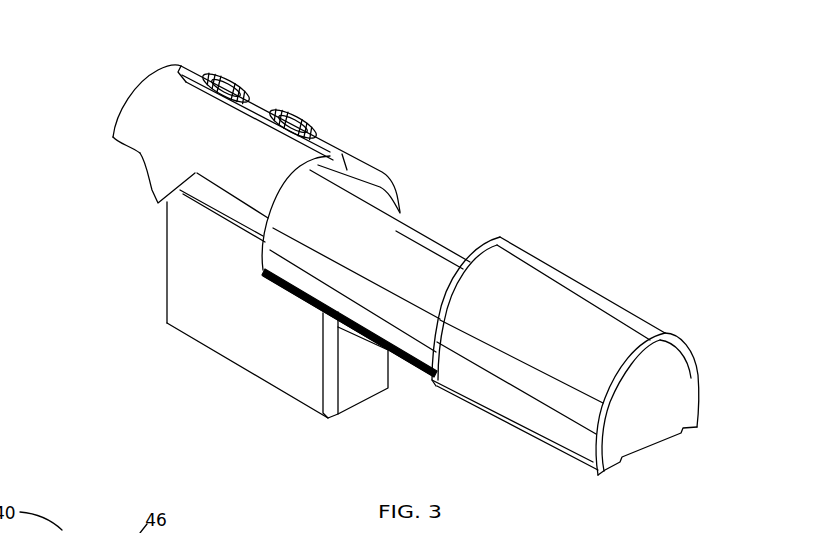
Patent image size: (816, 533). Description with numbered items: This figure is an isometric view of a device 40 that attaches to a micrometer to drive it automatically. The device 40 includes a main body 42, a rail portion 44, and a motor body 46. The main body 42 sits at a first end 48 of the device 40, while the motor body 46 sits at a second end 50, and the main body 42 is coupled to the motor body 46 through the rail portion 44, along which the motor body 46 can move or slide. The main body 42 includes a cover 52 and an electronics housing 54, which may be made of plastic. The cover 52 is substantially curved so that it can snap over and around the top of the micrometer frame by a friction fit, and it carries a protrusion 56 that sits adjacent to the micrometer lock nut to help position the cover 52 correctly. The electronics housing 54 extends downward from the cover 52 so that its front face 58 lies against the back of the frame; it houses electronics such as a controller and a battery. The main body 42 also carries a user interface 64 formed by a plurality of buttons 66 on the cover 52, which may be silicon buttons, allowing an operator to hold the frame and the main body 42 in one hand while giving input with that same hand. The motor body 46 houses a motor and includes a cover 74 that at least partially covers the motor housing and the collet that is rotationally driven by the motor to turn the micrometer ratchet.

The device 40 is at (600, 119).
The main body 42 is at (366, 97).
The rail portion 44 is at (457, 212).
The motor body 46 is at (600, 261).
The first end 48 is at (112, 99).
The second end 50 is at (735, 413).
The cover 52 is at (130, 133).
The electronics housing 54 is at (177, 303).
The protrusion 56 is at (162, 182).
The front face 58 is at (215, 330).
The user interface 64 is at (224, 62).
The buttons 66 is at (240, 79).
The cover 74 is at (637, 427).